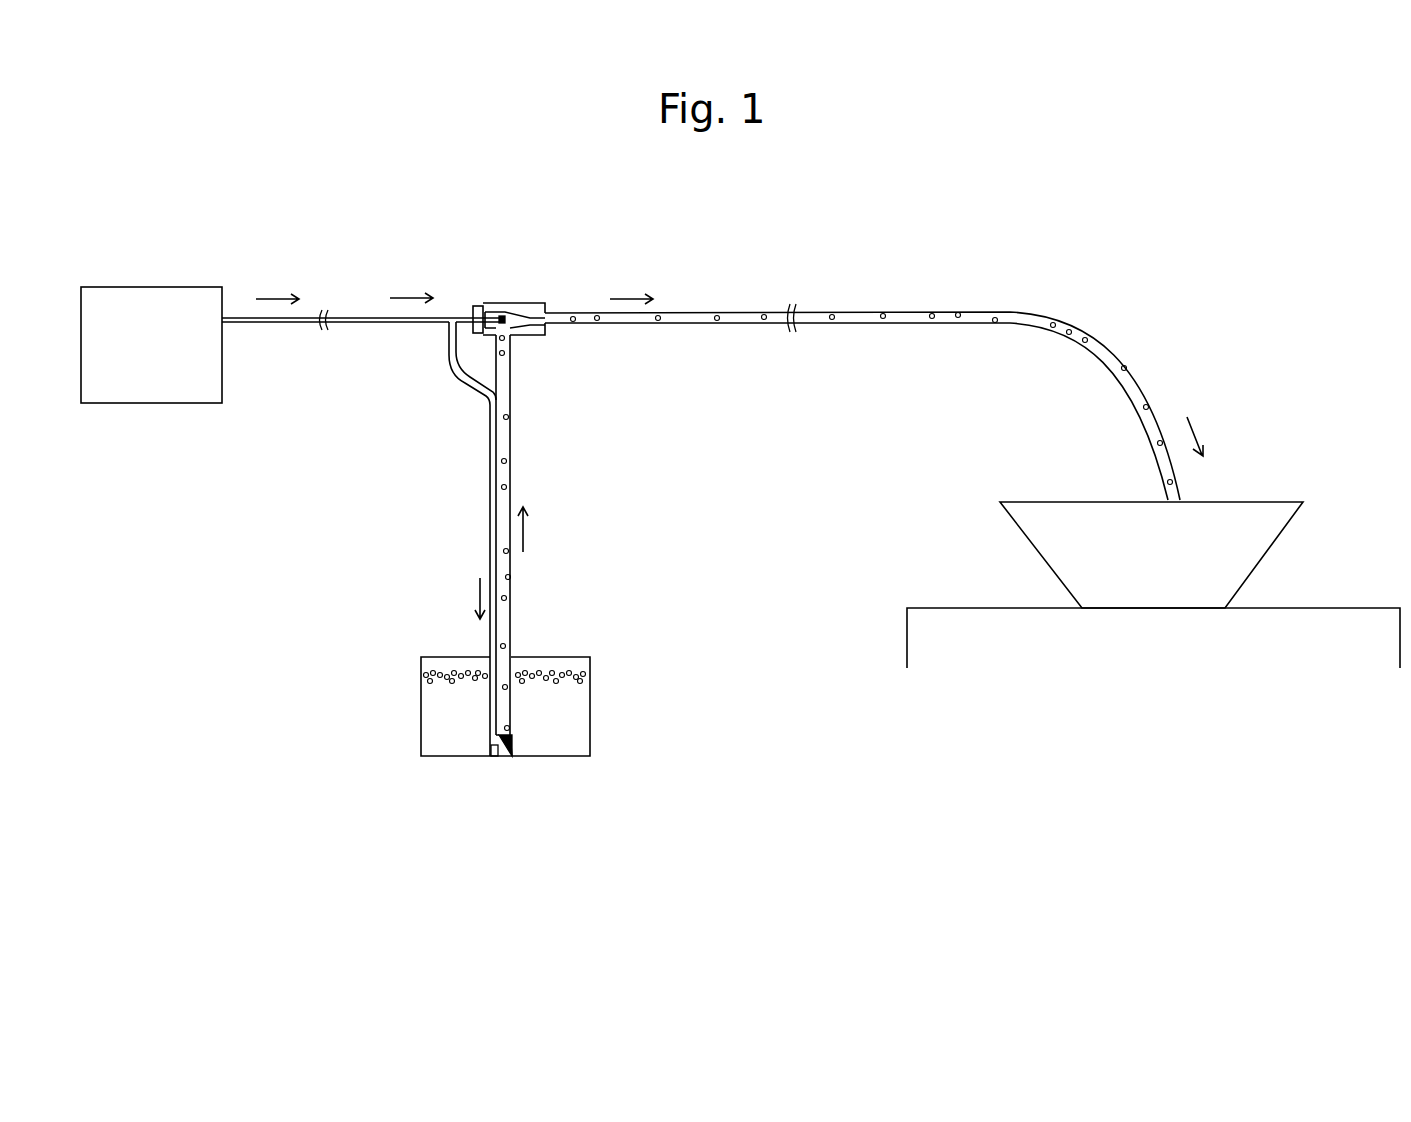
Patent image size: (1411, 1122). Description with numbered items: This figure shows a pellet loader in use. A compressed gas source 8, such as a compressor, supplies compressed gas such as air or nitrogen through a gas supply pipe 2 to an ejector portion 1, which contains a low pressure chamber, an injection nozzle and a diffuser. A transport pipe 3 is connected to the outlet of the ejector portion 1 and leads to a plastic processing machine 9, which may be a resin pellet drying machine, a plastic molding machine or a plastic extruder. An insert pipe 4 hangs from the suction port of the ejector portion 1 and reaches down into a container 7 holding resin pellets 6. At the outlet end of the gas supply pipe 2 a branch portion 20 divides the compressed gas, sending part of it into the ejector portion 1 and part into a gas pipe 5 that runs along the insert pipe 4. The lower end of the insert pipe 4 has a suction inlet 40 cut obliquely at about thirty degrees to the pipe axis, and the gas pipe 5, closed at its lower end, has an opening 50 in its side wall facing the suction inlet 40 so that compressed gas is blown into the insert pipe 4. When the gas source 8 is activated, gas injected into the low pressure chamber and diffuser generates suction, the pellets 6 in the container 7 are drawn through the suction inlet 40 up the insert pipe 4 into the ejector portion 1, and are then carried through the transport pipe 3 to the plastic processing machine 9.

The ejector portion 1 is at (530, 305).
The gas supply pipe 2 is at (355, 317).
The transport pipe 3 is at (910, 312).
The insert pipe 4 is at (512, 585).
The gas pipe 5 is at (490, 522).
The pellet 6 is at (833, 325).
The container 7 is at (590, 702).
The compressed gas source 8 is at (150, 392).
The plastic processing machine 9 is at (1253, 550).
The branch portion 20 is at (448, 325).
The suction inlet 40 is at (505, 758).
The opening 50 is at (492, 748).